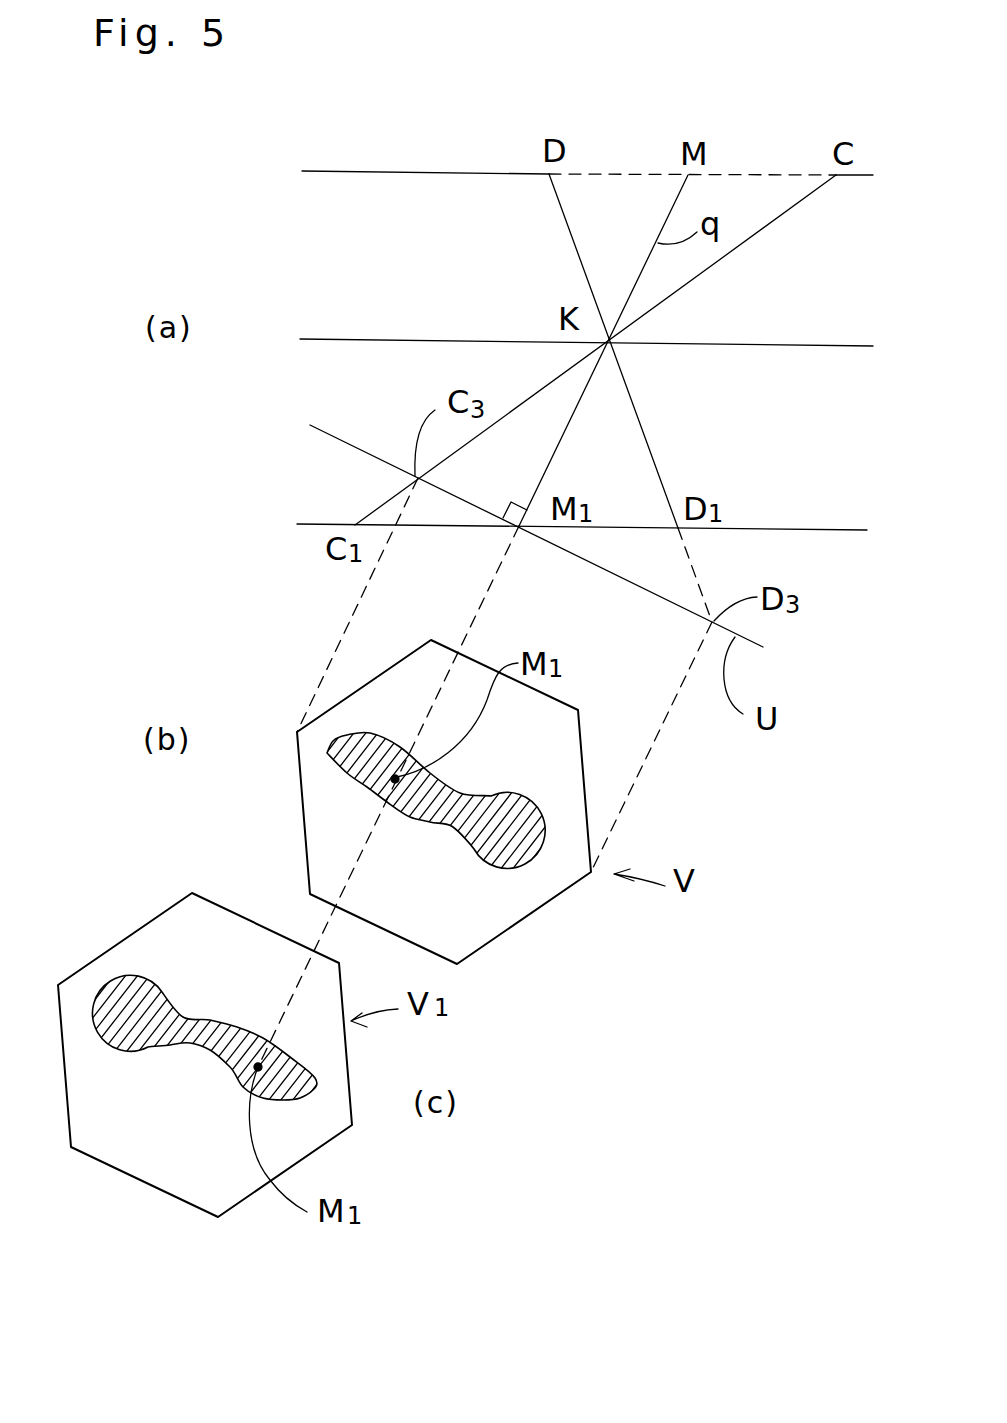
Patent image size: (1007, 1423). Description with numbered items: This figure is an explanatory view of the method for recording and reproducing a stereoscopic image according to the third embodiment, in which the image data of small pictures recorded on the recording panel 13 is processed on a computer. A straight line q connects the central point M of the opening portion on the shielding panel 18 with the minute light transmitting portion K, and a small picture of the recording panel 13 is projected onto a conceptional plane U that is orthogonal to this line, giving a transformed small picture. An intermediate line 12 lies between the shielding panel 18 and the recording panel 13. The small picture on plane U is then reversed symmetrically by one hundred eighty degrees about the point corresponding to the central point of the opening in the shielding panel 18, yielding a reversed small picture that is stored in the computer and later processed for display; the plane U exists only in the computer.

The shielding panel 18 is at (415, 172).
The line 12 is at (390, 339).
The recording panel 13 is at (792, 528).